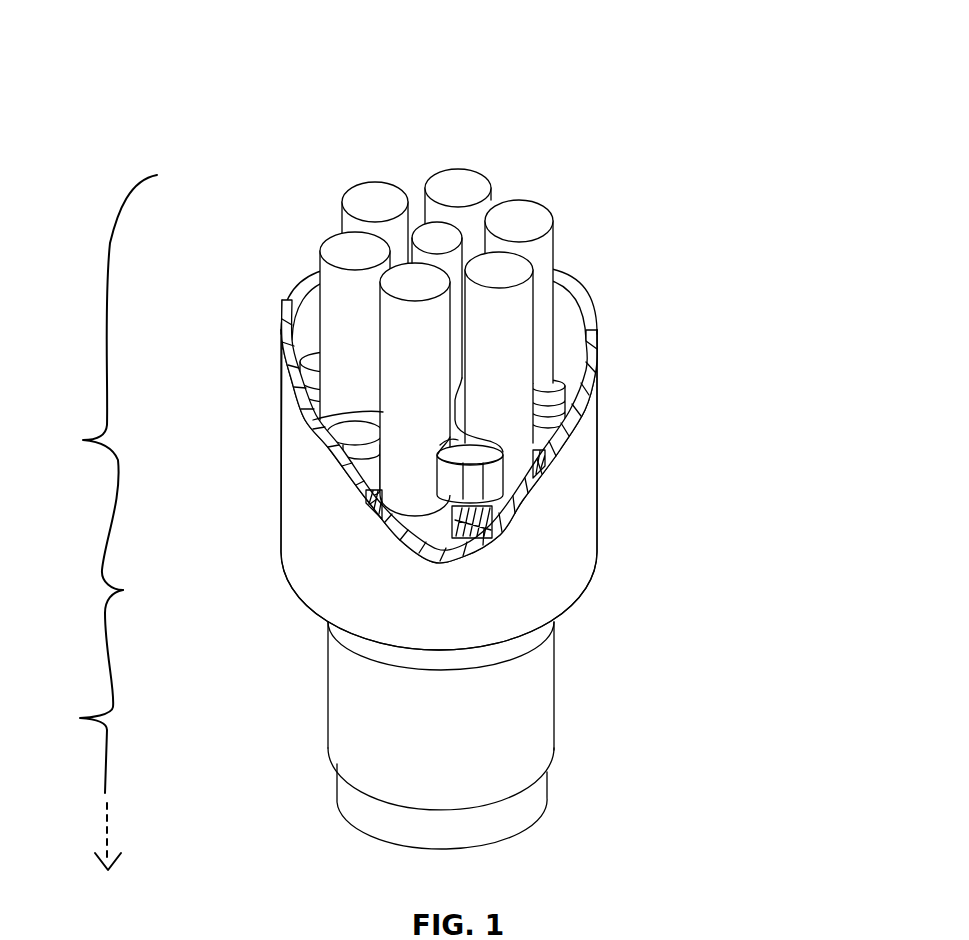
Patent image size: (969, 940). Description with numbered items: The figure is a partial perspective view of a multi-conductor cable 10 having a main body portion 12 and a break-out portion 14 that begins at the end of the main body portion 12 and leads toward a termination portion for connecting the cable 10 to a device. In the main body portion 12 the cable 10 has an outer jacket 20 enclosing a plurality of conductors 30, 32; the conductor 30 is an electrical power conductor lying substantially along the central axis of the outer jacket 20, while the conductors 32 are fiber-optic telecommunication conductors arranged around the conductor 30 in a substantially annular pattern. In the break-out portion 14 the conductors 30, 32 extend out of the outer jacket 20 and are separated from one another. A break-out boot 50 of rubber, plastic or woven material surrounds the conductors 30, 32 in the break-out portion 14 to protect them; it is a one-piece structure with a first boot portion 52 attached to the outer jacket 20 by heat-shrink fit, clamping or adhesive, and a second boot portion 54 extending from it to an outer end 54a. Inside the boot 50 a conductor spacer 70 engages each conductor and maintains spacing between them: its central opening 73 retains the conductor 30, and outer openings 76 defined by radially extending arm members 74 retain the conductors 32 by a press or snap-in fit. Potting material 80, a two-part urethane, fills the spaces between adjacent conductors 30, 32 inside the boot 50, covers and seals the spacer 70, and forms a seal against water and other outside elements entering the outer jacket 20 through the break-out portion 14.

The multi-conductor cable 10 is at (572, 78).
The main body portion 12 is at (76, 730).
The break-out portion 14 is at (94, 382).
The outer jacket 20 is at (364, 802).
The conductor 30 is at (433, 230).
The conductors 32 is at (467, 182).
The break-out boot 50 is at (583, 602).
The first boot portion 52 is at (400, 707).
The second boot portion 54 is at (303, 540).
The outer end of the boot 54a is at (592, 333).
The conductor spacer 70 is at (505, 475).
The central opening 73 is at (440, 412).
The arm members 74 is at (440, 446).
The outer openings 76 is at (541, 437).
The potting material 80 is at (470, 510).